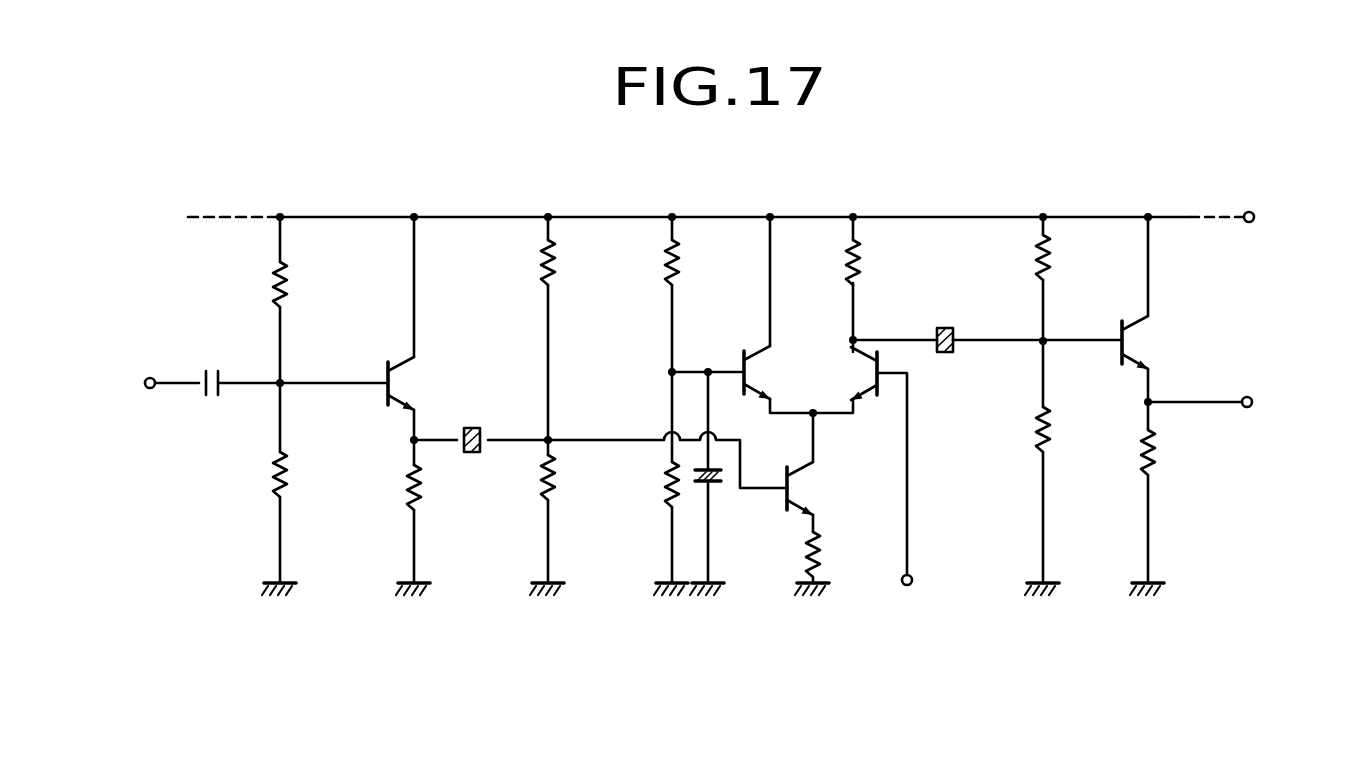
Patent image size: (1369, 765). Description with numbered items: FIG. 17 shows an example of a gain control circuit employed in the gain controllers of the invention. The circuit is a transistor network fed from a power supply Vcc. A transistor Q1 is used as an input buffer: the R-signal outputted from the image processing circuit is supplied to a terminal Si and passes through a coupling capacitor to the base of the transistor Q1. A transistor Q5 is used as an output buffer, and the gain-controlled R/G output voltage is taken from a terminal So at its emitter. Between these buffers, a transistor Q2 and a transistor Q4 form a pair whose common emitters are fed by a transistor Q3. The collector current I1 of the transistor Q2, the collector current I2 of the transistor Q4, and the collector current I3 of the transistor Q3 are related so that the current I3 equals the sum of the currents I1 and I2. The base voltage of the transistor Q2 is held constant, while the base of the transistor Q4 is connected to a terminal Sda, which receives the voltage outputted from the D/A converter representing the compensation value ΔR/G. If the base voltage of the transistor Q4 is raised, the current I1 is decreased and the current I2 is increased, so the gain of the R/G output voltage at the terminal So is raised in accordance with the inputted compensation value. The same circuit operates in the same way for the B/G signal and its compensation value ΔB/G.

The transistor Q1 is at (402, 358).
The transistor Q2 is at (757, 350).
The transistor Q3 is at (800, 492).
The transistor Q4 is at (858, 372).
The transistor Q5 is at (1137, 318).
The collector current I1 is at (778, 322).
The collector current I2 is at (863, 290).
The collector current I3 is at (823, 425).
The terminal Si is at (132, 384).
The terminal So is at (1266, 403).
The terminal Sda is at (910, 597).
The power supply Vcc is at (1274, 218).